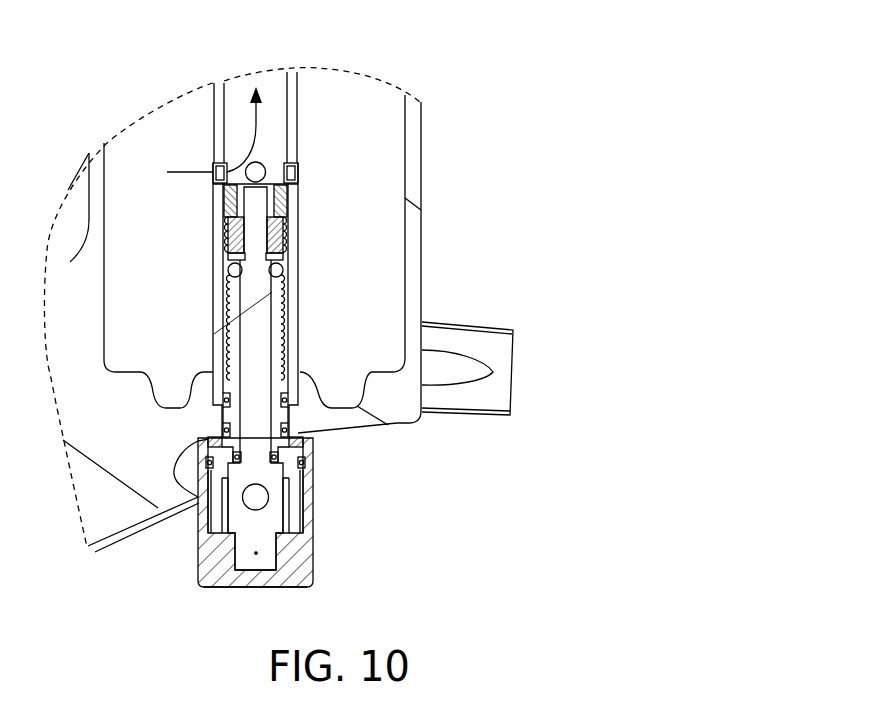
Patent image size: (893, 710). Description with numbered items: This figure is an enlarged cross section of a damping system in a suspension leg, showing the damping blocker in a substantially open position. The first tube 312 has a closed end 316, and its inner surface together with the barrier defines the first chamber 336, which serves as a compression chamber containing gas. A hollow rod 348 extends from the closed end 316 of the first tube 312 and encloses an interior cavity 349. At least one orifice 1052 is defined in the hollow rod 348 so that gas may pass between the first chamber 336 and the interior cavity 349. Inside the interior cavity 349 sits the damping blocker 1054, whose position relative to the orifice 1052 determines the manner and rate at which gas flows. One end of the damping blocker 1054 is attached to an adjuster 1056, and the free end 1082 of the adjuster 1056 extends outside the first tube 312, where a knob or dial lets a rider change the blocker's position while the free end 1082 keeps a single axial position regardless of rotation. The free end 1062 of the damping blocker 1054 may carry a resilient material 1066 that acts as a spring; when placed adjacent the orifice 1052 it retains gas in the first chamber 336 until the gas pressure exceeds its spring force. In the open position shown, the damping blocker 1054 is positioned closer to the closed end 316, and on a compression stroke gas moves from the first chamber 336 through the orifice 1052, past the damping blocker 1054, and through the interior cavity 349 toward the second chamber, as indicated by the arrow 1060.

The first tube 312 is at (423, 180).
The closed end 316 is at (398, 424).
The first chamber 336 is at (190, 347).
The hollow rod 348 is at (300, 138).
The interior cavity 349 is at (236, 86).
The orifice 1052 is at (297, 180).
The damping blocker 1054 is at (288, 240).
The adjuster 1056 is at (305, 552).
The arrow 1060 is at (193, 172).
The free end 1062 is at (297, 168).
The resilient material 1066 is at (287, 205).
The free end 1082 is at (290, 586).